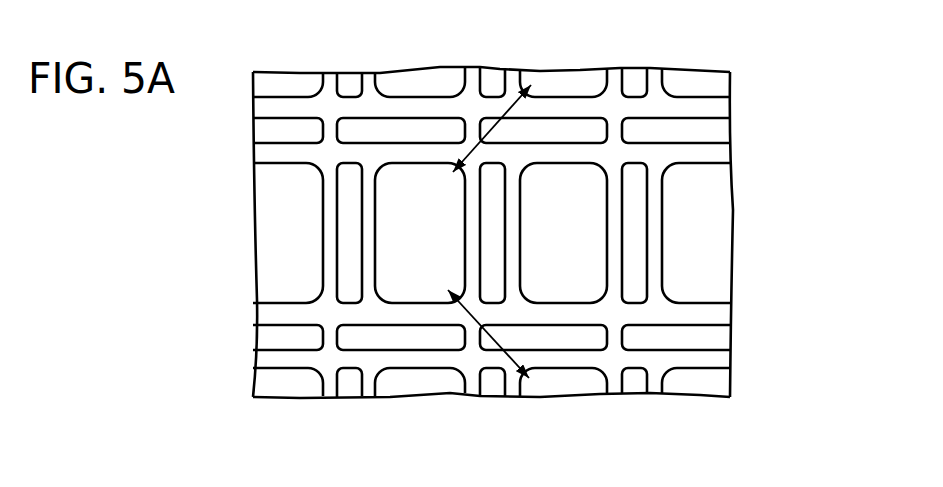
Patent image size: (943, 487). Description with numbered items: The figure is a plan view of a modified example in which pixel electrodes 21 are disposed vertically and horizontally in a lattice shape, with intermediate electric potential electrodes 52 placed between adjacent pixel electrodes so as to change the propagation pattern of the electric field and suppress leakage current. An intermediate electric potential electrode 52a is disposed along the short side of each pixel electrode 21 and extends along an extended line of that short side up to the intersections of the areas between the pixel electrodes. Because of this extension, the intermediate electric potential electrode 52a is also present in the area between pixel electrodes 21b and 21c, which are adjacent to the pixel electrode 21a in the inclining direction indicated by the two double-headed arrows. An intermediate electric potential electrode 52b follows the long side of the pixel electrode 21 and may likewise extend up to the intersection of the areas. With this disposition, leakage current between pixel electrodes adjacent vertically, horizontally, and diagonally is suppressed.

The pixel electrode 21 is at (593, 270).
The pixel electrode 21a is at (397, 237).
The pixel electrode 21b is at (565, 80).
The pixel electrode 21c is at (573, 388).
The intermediate electric potential electrode 52 is at (553, 232).
The intermediate electric potential electrode 52a is at (720, 130).
The intermediate electric potential electrode 52b is at (635, 233).